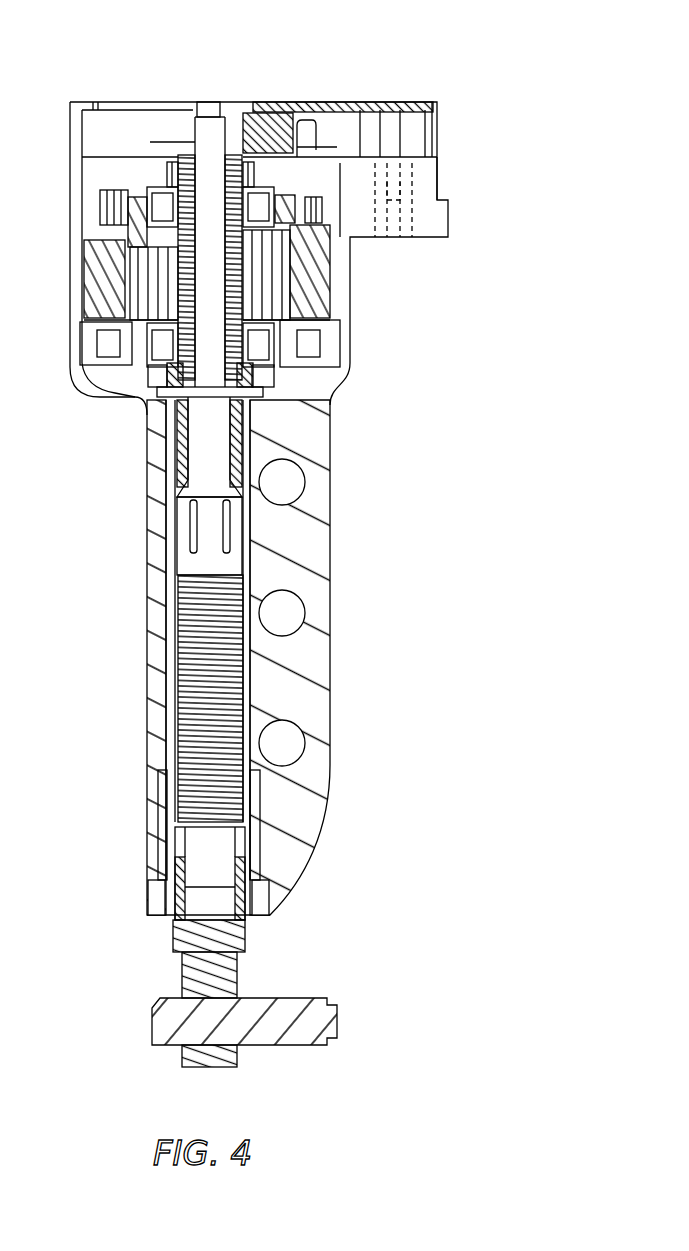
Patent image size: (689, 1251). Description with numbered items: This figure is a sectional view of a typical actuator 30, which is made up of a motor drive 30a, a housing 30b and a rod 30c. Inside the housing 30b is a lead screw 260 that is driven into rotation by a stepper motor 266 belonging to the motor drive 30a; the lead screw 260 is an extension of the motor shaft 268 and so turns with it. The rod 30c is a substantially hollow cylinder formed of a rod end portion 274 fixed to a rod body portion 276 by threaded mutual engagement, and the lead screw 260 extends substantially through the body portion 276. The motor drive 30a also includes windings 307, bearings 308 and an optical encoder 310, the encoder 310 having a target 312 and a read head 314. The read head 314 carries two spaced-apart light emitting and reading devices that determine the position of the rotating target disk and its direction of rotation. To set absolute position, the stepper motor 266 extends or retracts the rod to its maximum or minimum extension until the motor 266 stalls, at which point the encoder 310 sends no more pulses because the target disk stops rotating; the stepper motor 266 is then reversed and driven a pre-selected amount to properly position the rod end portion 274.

The actuator 30 is at (389, 338).
The motor drive 30a is at (456, 168).
The housing 30b is at (336, 517).
The rod 30c is at (238, 972).
The lead screw 260 is at (196, 862).
The stepper motor 266 is at (122, 262).
The motor shaft 268 is at (205, 230).
The rod end portion 274 is at (176, 955).
The rod body portion 276 is at (250, 780).
The windings 307 is at (265, 268).
The bearings 308 is at (360, 102).
The optical encoder 310 is at (183, 140).
The target 312 is at (192, 140).
The read head 314 is at (272, 104).